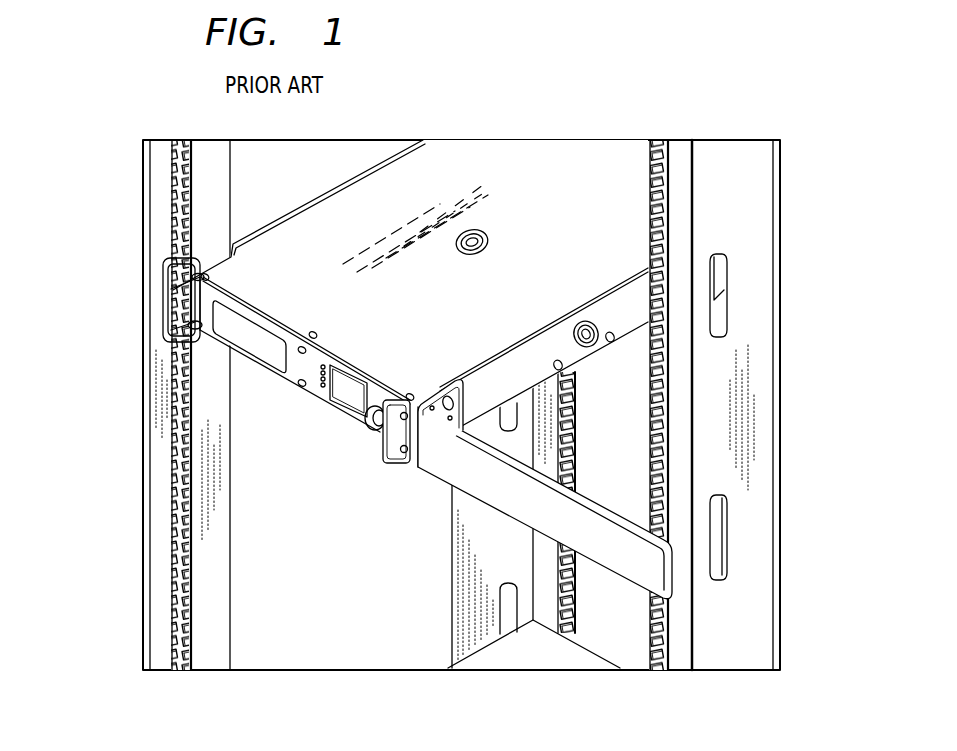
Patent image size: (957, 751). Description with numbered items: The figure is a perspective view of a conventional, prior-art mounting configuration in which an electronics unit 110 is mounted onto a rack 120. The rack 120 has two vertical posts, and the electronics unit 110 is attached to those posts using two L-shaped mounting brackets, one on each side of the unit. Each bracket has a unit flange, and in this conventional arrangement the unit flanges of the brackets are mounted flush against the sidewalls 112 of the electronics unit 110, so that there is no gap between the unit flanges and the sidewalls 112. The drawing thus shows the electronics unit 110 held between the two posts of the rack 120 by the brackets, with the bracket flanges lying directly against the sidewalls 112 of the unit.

The electronics unit 110 is at (456, 162).
The sidewall 112 is at (314, 195).
The rack 120 is at (792, 430).